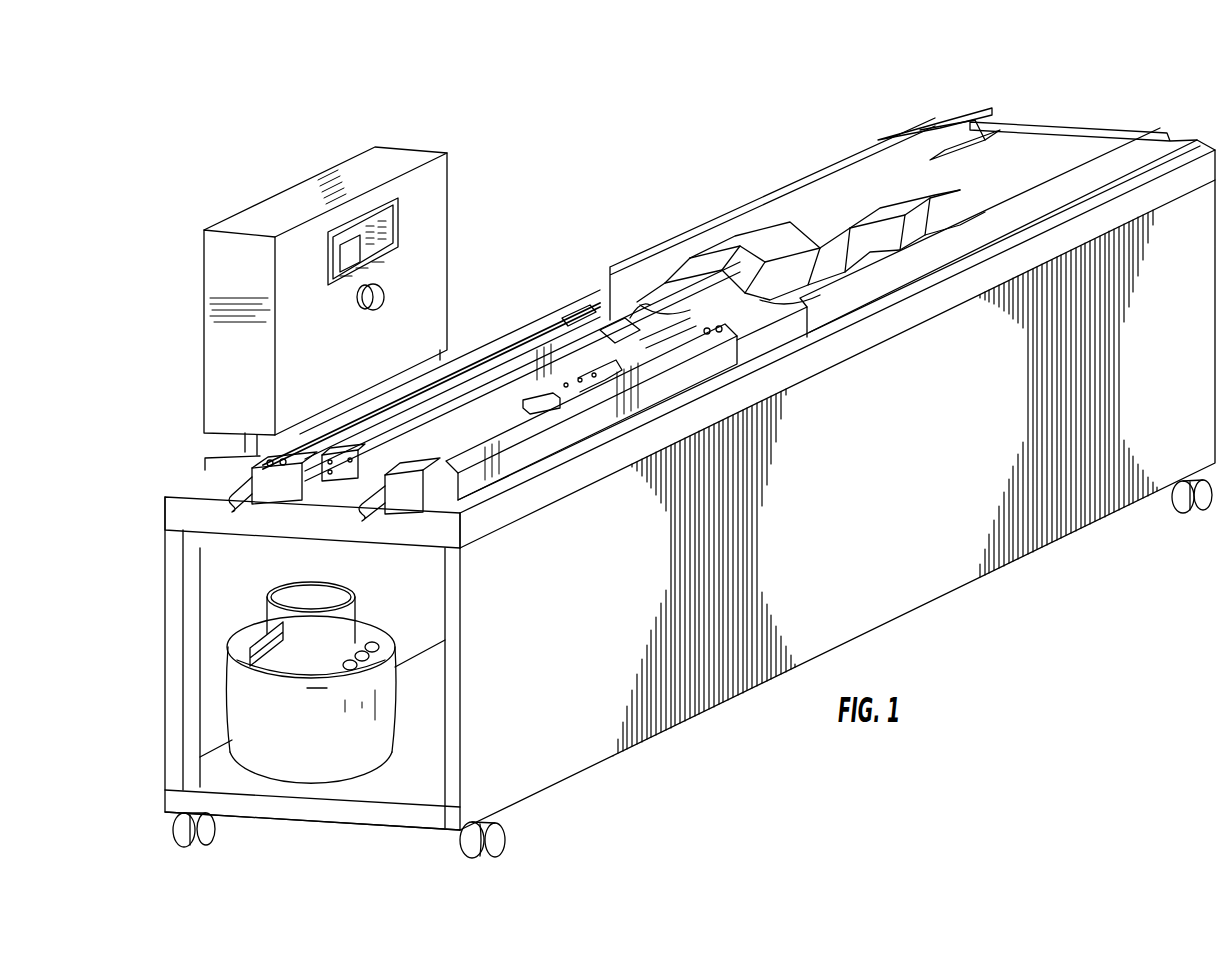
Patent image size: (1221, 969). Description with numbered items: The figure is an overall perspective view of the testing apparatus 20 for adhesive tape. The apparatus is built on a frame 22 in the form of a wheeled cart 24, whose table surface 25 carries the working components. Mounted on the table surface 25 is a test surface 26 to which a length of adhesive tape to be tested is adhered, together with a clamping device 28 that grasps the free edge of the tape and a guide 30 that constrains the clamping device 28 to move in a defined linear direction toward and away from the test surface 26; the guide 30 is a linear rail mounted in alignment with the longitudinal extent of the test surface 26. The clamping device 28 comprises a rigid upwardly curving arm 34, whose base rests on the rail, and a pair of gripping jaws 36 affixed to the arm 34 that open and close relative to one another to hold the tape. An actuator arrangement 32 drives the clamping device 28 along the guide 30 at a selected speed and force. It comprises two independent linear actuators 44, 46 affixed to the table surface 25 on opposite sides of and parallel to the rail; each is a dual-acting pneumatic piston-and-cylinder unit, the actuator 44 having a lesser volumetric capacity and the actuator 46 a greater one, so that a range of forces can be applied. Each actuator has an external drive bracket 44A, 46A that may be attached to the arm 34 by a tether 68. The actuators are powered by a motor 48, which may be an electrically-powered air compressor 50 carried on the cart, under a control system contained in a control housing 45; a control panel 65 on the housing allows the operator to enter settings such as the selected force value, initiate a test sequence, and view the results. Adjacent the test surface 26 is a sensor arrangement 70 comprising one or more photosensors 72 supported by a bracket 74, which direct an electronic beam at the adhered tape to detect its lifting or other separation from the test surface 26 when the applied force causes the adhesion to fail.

The testing apparatus 20 is at (962, 598).
The frame 22 is at (668, 720).
The wheeled cart 24 is at (416, 813).
The table surface 25 is at (985, 225).
The test surface 26 is at (783, 245).
The clamping device 28 is at (607, 340).
The guide 30 is at (563, 393).
The actuator arrangement 32 is at (483, 433).
The arm 34 is at (577, 320).
The gripping jaws 36 is at (660, 337).
The linear actuator 44 is at (283, 490).
The external drive bracket 44A is at (347, 462).
The control housing 45 is at (452, 215).
The linear actuator 46 is at (415, 493).
The external drive bracket 46A is at (657, 353).
The motor 48 is at (350, 783).
The air compressor 50 is at (307, 740).
The control panel 65 is at (323, 262).
The tether 68 is at (580, 380).
The sensor arrangement 70 is at (818, 162).
The photosensors 72 is at (703, 265).
The bracket 74 is at (882, 148).